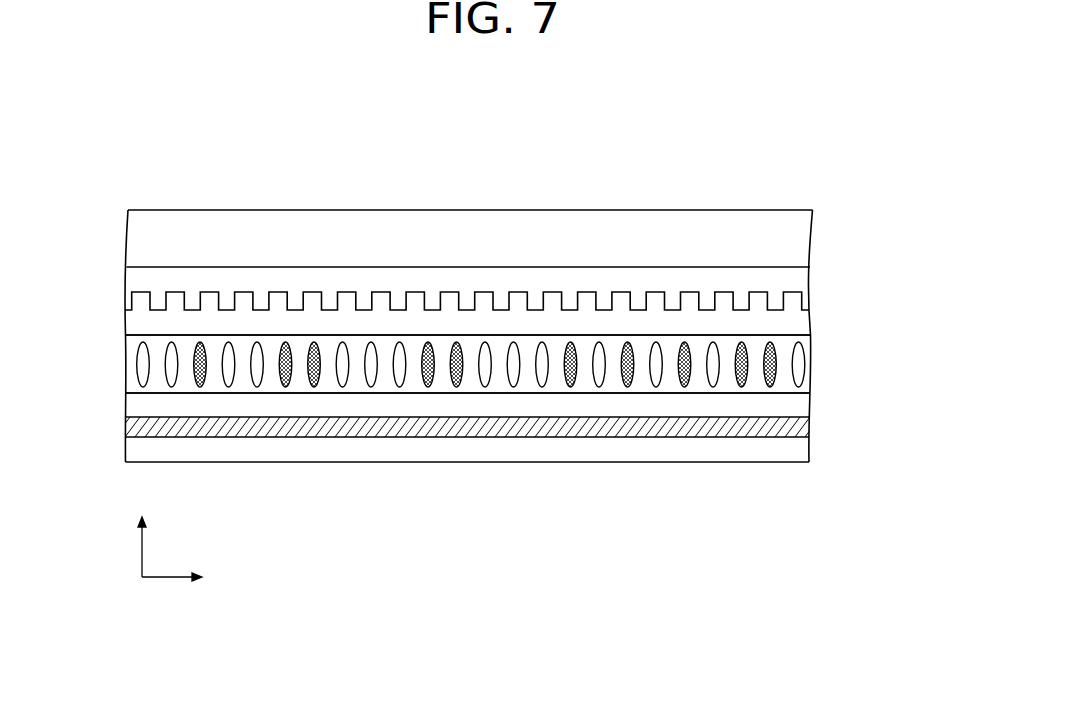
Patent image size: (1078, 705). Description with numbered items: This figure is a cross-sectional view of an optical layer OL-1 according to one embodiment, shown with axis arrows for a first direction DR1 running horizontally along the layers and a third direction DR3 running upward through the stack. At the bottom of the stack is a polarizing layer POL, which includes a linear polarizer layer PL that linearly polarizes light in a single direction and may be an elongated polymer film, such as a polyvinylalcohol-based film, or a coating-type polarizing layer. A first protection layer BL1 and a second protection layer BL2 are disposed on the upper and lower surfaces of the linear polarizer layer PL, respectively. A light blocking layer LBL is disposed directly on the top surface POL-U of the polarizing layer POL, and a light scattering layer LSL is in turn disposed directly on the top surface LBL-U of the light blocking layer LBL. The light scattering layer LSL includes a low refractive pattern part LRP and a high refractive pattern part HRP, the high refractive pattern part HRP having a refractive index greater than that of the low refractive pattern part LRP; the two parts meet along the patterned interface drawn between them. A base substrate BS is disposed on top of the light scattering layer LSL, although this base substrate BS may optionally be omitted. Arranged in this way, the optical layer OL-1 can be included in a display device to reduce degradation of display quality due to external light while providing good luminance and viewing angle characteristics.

The optical layer OL-1 is at (495, 283).
The base substrate BS is at (797, 237).
The light scattering layer LSL is at (539, 301).
The high refractive pattern part HRP is at (797, 278).
The low refractive pattern part LRP is at (797, 322).
The light blocking layer LBL is at (805, 350).
The top surface of light blocking layer LBL-U is at (167, 334).
The top surface of polarizing layer POL-U is at (163, 391).
The polarizing layer POL is at (530, 435).
The first protection layer BL1 is at (793, 405).
The linear polarizer layer PL is at (793, 425).
The second protection layer BL2 is at (793, 447).
The third direction DR3 is at (141, 533).
The first direction DR1 is at (192, 575).